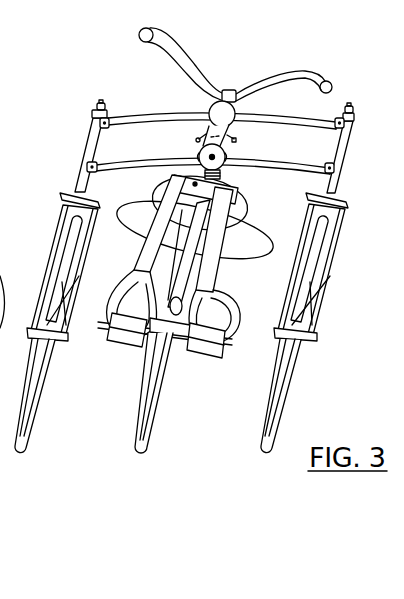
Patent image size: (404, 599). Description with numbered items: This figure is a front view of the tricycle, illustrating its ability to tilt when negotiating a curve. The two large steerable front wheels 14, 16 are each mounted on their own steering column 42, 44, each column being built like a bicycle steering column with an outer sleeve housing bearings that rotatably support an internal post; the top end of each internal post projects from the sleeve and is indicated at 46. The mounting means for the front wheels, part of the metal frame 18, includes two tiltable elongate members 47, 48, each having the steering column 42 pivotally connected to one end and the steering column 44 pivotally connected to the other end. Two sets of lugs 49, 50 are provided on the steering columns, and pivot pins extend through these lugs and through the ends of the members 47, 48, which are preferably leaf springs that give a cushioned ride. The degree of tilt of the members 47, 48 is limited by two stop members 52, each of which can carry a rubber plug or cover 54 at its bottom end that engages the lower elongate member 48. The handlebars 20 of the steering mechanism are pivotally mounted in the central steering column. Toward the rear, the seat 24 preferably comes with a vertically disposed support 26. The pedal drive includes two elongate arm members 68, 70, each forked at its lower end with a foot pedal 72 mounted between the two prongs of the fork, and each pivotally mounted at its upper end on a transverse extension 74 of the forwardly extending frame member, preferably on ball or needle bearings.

The front wheel 14 is at (35, 391).
The front wheel 16 is at (276, 408).
The frame 18 is at (4, 288).
The handlebars 20 is at (305, 73).
The seat 24 is at (243, 247).
The support 26 is at (246, 212).
The steering column 42 is at (92, 140).
The steering column 44 is at (340, 158).
The top end of internal post 46 is at (98, 104).
The tiltable elongate member 47 is at (161, 116).
The tiltable elongate member 48 is at (169, 156).
The lug 49 is at (336, 180).
The lug 50 is at (344, 123).
The stop member 52 is at (236, 137).
The rubber plug or cover 54 is at (236, 141).
The elongate arm member 68 is at (146, 248).
The elongate arm member 70 is at (226, 284).
The foot pedal 72 is at (123, 336).
The transverse extension 74 is at (226, 189).